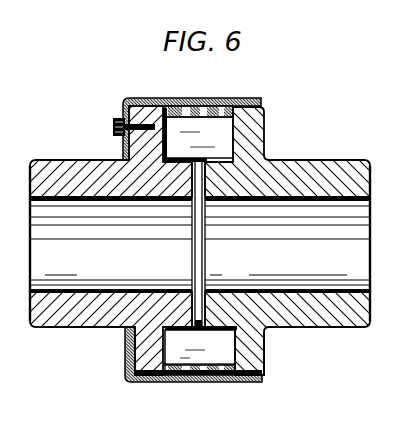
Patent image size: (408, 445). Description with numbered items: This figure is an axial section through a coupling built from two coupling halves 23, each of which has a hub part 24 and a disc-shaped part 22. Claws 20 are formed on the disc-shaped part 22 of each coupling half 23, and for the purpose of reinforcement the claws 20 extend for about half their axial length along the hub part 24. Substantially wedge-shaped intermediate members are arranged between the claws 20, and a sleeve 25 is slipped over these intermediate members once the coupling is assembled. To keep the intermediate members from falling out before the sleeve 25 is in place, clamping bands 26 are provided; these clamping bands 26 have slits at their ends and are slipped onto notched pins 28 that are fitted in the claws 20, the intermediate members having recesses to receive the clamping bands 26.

The claw 20 is at (178, 384).
The disc-shaped part 22 is at (254, 355).
The coupling half 23 is at (68, 318).
The hub part 24 is at (210, 310).
The sleeve 25 is at (144, 384).
The clamping band 26 is at (224, 384).
The notched pin 28 is at (205, 386).